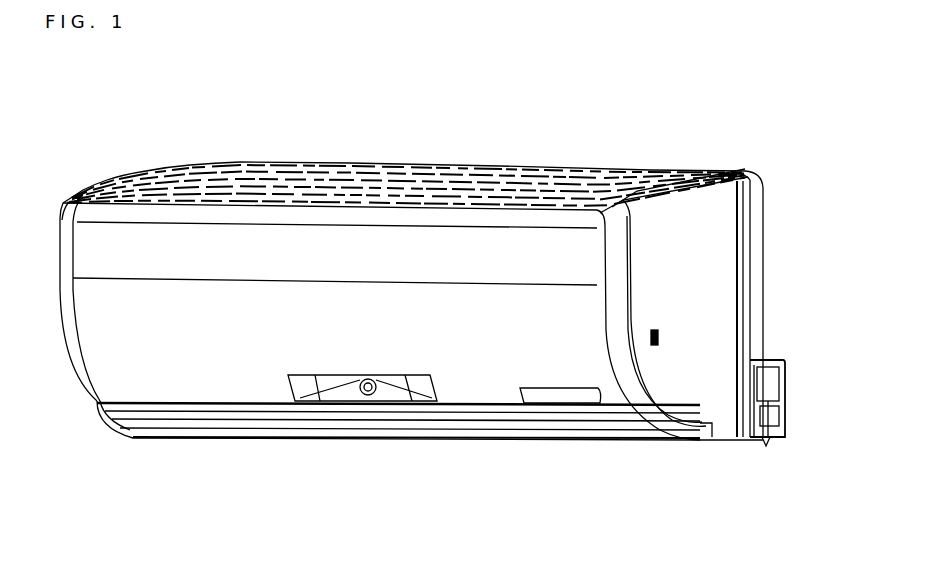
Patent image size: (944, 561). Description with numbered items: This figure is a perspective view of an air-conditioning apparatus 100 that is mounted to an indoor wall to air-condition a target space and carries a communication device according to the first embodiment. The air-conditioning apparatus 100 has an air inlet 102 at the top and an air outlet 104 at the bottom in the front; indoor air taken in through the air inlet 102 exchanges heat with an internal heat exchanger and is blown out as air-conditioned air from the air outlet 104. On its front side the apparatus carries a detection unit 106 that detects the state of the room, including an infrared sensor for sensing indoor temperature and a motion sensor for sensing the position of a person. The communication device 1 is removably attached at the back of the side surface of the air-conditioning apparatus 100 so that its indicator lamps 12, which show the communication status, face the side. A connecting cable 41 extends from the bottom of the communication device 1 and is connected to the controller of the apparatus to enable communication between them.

The air-conditioning apparatus 100 is at (668, 104).
The air inlet 102 is at (423, 168).
The air outlet 104 is at (368, 422).
The detection unit 106 is at (347, 403).
The communication device 1 is at (794, 352).
The indicator lamps 12 is at (787, 405).
The connecting cable 41 is at (767, 438).